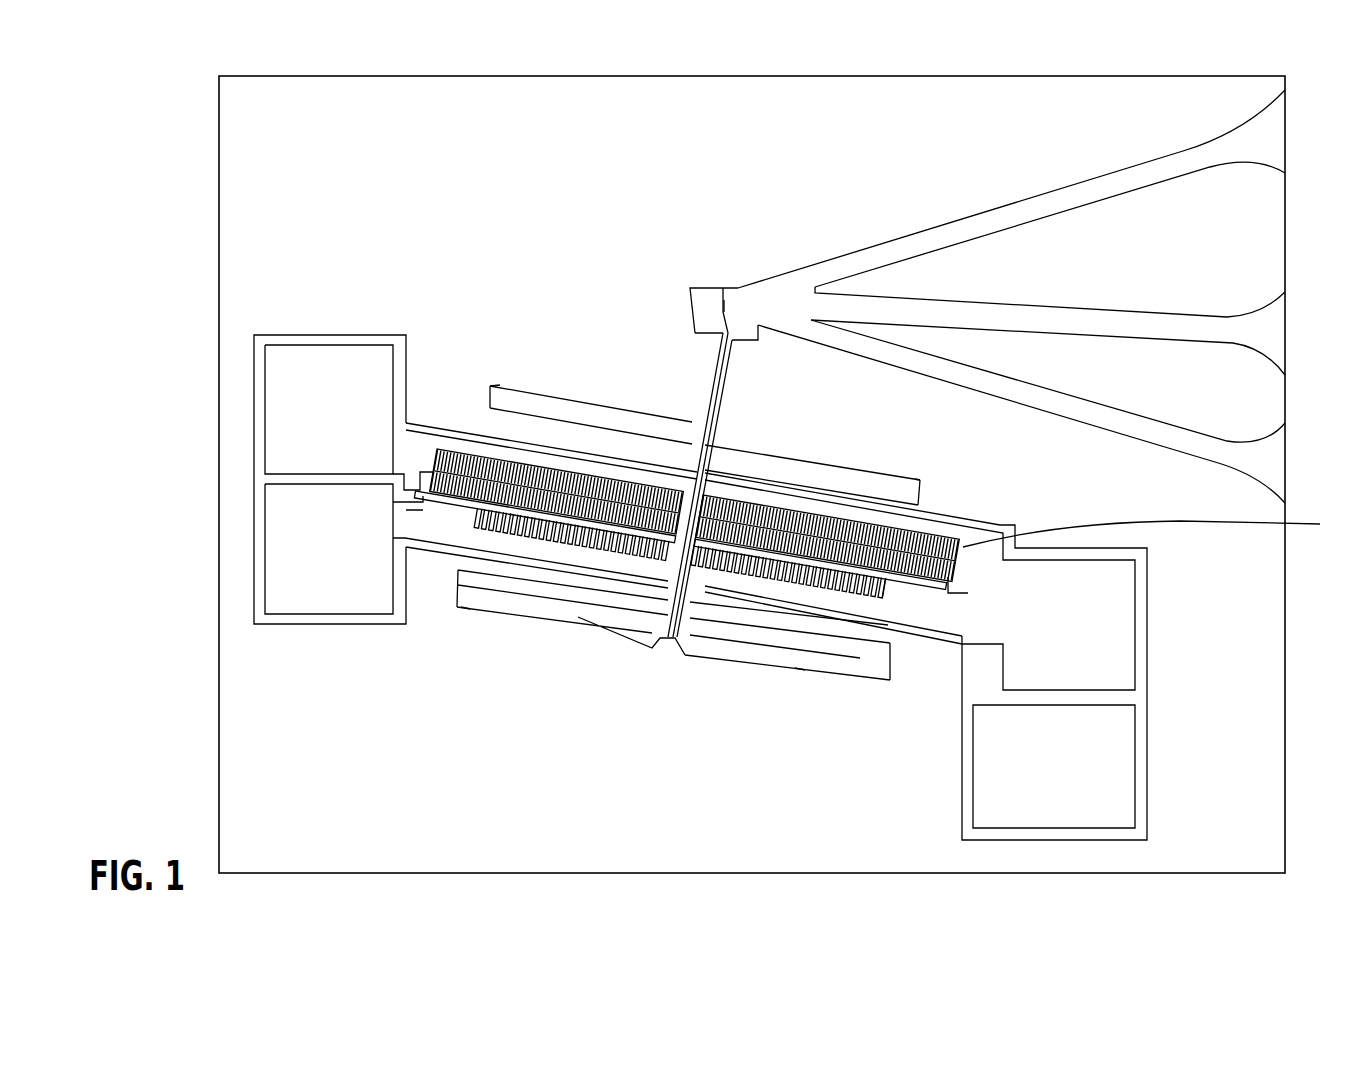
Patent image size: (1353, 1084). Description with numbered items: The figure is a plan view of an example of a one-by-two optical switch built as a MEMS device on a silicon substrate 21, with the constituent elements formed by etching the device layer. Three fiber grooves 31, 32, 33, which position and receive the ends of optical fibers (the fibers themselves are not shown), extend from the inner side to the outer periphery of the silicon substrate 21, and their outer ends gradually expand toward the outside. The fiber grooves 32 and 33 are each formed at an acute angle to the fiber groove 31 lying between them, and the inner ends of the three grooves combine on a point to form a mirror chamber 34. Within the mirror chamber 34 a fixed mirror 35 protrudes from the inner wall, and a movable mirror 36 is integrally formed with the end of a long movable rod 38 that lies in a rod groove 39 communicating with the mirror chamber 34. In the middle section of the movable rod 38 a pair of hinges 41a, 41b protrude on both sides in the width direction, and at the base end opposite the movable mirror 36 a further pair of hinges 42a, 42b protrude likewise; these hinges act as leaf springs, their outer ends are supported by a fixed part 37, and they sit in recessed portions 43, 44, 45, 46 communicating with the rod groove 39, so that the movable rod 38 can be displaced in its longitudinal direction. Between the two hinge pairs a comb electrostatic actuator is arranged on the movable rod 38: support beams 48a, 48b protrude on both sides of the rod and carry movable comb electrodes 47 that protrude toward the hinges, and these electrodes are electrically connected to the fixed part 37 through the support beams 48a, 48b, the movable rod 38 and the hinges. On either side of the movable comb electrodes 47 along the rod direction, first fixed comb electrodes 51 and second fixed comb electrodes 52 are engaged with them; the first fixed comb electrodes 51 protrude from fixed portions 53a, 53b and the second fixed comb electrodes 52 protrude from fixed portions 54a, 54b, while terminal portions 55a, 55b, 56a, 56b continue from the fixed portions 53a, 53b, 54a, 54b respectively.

The silicon substrate 21 is at (1043, 296).
The fiber groove 31 is at (1116, 306).
The fiber groove 32 is at (1095, 175).
The fiber groove 33 is at (1108, 405).
The mirror chamber 34 is at (708, 288).
The fixed mirror 35 is at (737, 290).
The movable mirror 36 is at (742, 322).
The fixed part 37 is at (236, 206).
The movable rod 38 is at (716, 366).
The rod groove 39 is at (716, 408).
The hinge 41a is at (618, 428).
The hinge 41b is at (812, 458).
The hinge 42a is at (598, 625).
The hinge 42b is at (750, 648).
The recessed portion 43 is at (500, 392).
The recessed portion 44 is at (926, 470).
The recessed portion 45 is at (496, 612).
The recessed portion 46 is at (792, 668).
The movable comb electrodes 47 is at (880, 602).
The support beam 48a is at (450, 505).
The support beam 48b is at (920, 583).
The first fixed comb electrodes 51 is at (893, 595).
The second fixed comb electrodes 52 is at (1155, 528).
The fixed portion 53a is at (645, 570).
The fixed portion 53b is at (722, 580).
The fixed portion 54a is at (500, 455).
The fixed portion 54b is at (897, 524).
The terminal portion 55a is at (280, 548).
The terminal portion 55b is at (1118, 775).
The terminal portion 56a is at (280, 418).
The terminal portion 56b is at (1118, 640).